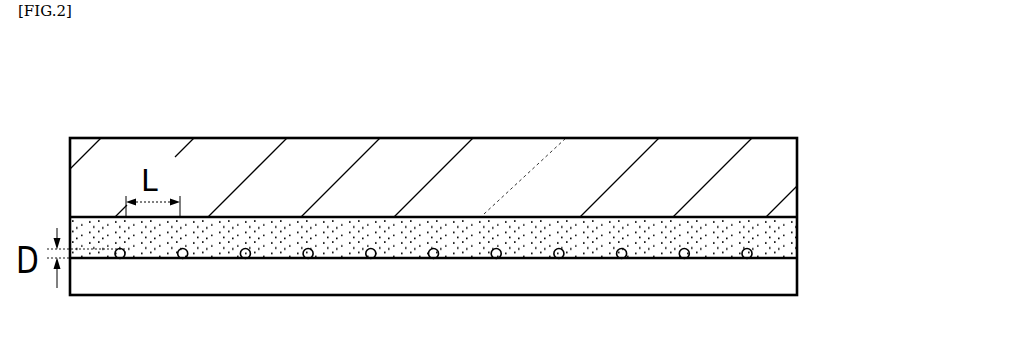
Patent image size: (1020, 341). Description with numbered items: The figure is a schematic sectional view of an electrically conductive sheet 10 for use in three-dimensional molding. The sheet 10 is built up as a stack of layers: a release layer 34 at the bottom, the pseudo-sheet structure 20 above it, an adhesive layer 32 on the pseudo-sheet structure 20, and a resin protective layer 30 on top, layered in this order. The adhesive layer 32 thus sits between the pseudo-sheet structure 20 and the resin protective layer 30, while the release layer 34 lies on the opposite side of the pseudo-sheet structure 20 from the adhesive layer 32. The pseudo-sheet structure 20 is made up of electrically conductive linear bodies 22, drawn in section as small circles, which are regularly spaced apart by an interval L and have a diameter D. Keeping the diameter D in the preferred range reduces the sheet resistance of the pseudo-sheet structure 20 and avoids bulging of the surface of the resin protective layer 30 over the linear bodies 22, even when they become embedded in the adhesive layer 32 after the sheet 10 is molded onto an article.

The electrically conductive sheet for use in three-dimensional molding 10 is at (818, 110).
The pseudo-sheet structure 20 is at (765, 253).
The electrically conductive linear bodies 22 is at (560, 248).
The resin protective layer 30 is at (777, 183).
The adhesive layer 32 is at (787, 228).
The release layer 34 is at (790, 277).